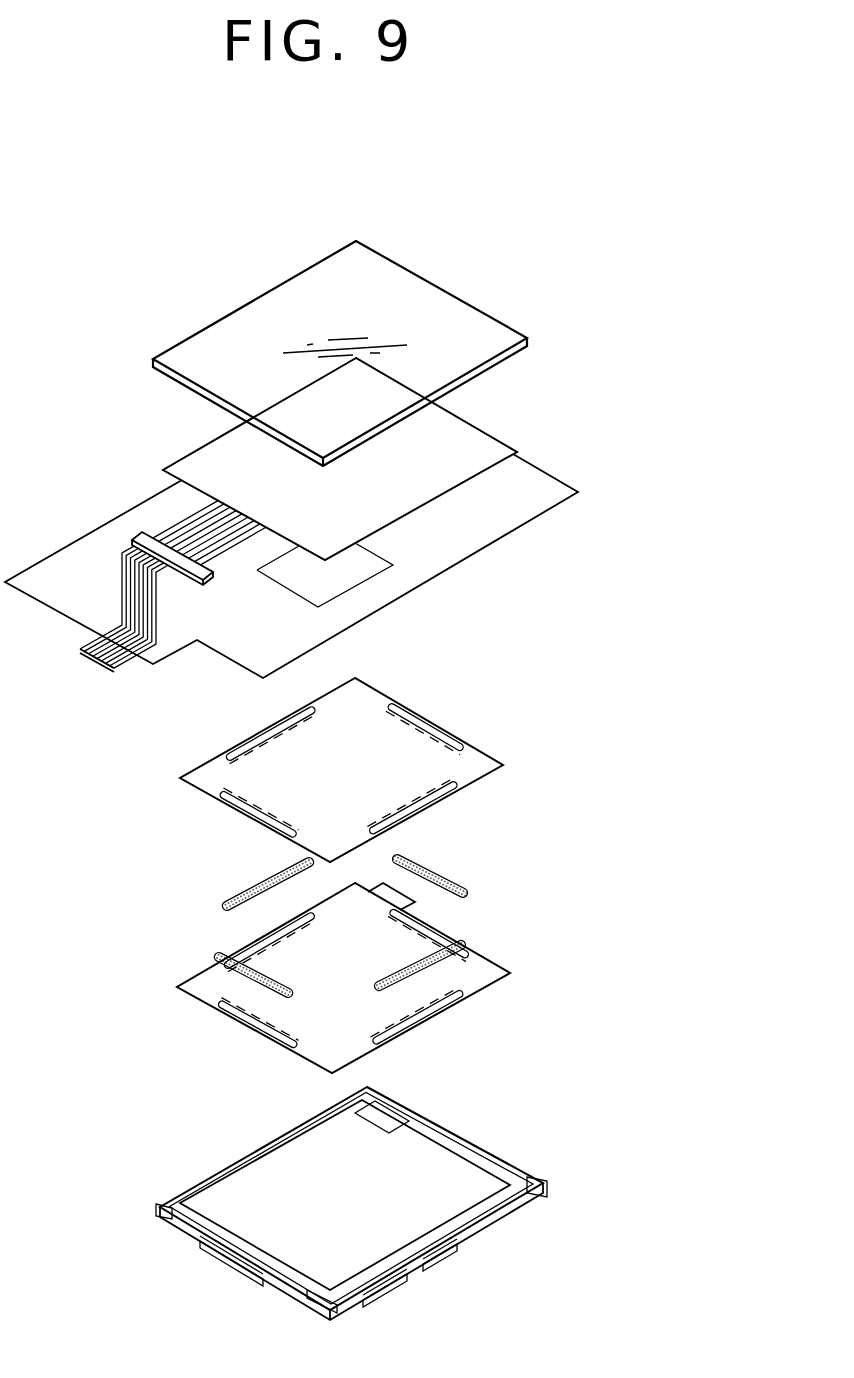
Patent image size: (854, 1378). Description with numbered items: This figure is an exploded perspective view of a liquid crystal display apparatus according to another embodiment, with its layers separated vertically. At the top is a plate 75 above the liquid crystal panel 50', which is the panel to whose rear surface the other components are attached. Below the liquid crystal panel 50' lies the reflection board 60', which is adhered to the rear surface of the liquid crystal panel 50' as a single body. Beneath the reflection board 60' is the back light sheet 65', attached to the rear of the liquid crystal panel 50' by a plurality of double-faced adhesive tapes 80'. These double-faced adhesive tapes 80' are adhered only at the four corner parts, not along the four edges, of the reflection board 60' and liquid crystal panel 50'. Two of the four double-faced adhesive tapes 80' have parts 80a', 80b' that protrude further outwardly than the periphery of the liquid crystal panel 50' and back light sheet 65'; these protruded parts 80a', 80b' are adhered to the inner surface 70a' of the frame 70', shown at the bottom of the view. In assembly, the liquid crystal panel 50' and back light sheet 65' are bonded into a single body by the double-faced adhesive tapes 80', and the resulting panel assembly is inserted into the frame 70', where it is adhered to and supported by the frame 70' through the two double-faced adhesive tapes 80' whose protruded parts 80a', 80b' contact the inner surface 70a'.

The protective plate 75 is at (183, 360).
The liquid crystal panel 50' is at (283, 459).
The reflection board 60' is at (278, 770).
The back light sheet 65' is at (286, 978).
The double-faced adhesive tapes 80' is at (319, 901).
The protruded part 80a' is at (480, 978).
The protruded part 80b' is at (183, 975).
The frame 70' is at (305, 1203).
The inner surface 70a' is at (352, 1287).